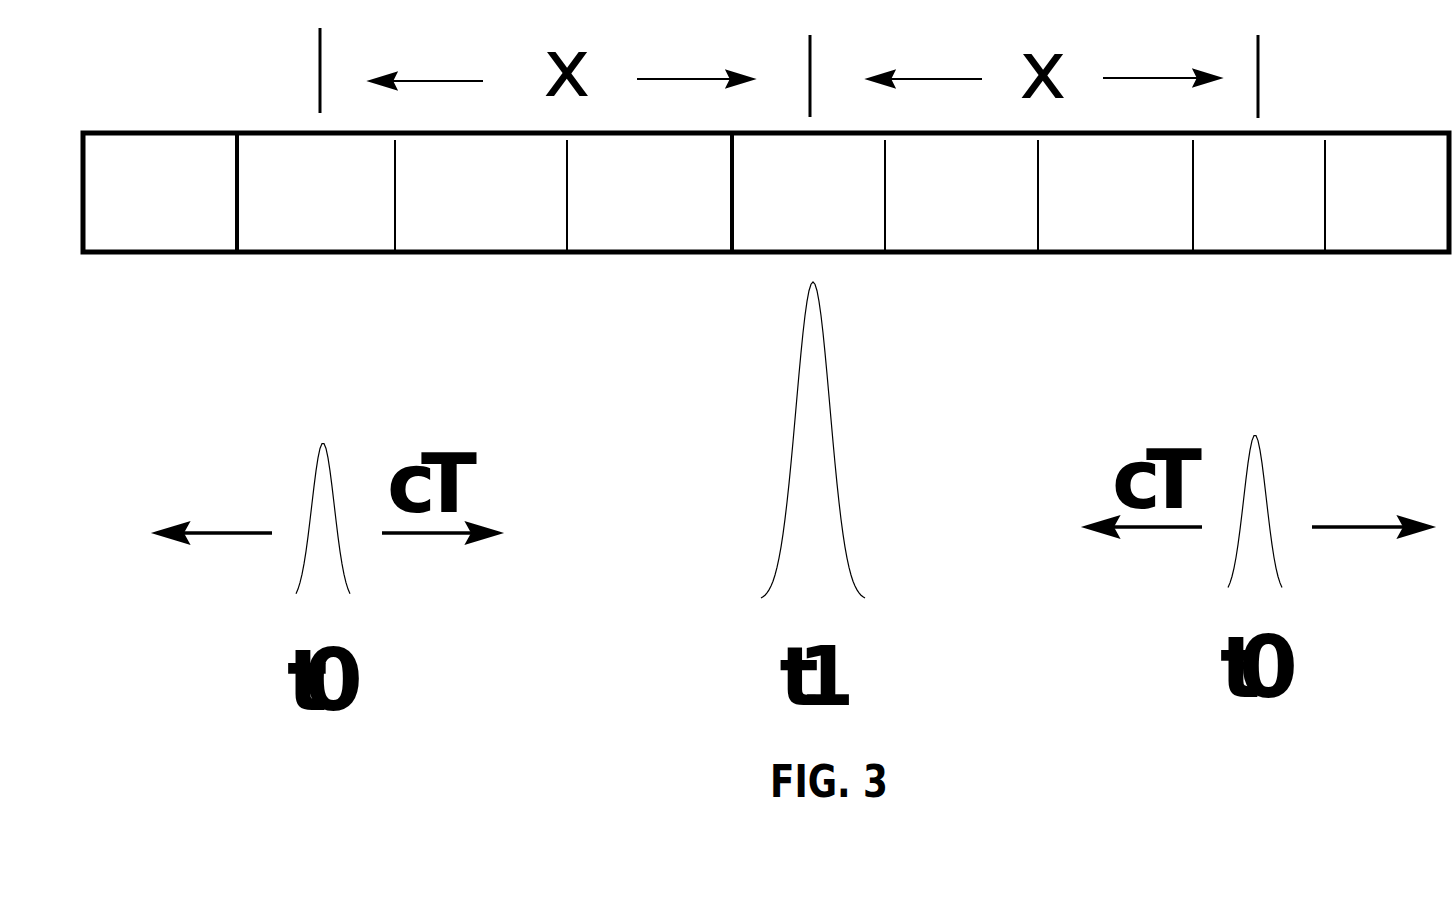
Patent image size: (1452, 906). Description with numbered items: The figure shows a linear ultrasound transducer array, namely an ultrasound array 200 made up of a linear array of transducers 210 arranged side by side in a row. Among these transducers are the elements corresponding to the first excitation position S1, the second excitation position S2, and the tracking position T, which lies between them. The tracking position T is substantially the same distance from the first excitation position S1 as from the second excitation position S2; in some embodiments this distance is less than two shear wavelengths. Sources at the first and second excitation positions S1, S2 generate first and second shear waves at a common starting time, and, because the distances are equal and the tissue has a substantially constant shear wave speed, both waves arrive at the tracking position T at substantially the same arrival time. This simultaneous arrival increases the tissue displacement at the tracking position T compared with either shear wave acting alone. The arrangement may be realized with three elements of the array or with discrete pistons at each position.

The ultrasound array 200 is at (190, 131).
The linear array of transducers 210 is at (456, 232).
The first excitation position S1 is at (336, 195).
The tracking position T is at (835, 195).
The second excitation position S2 is at (1259, 195).